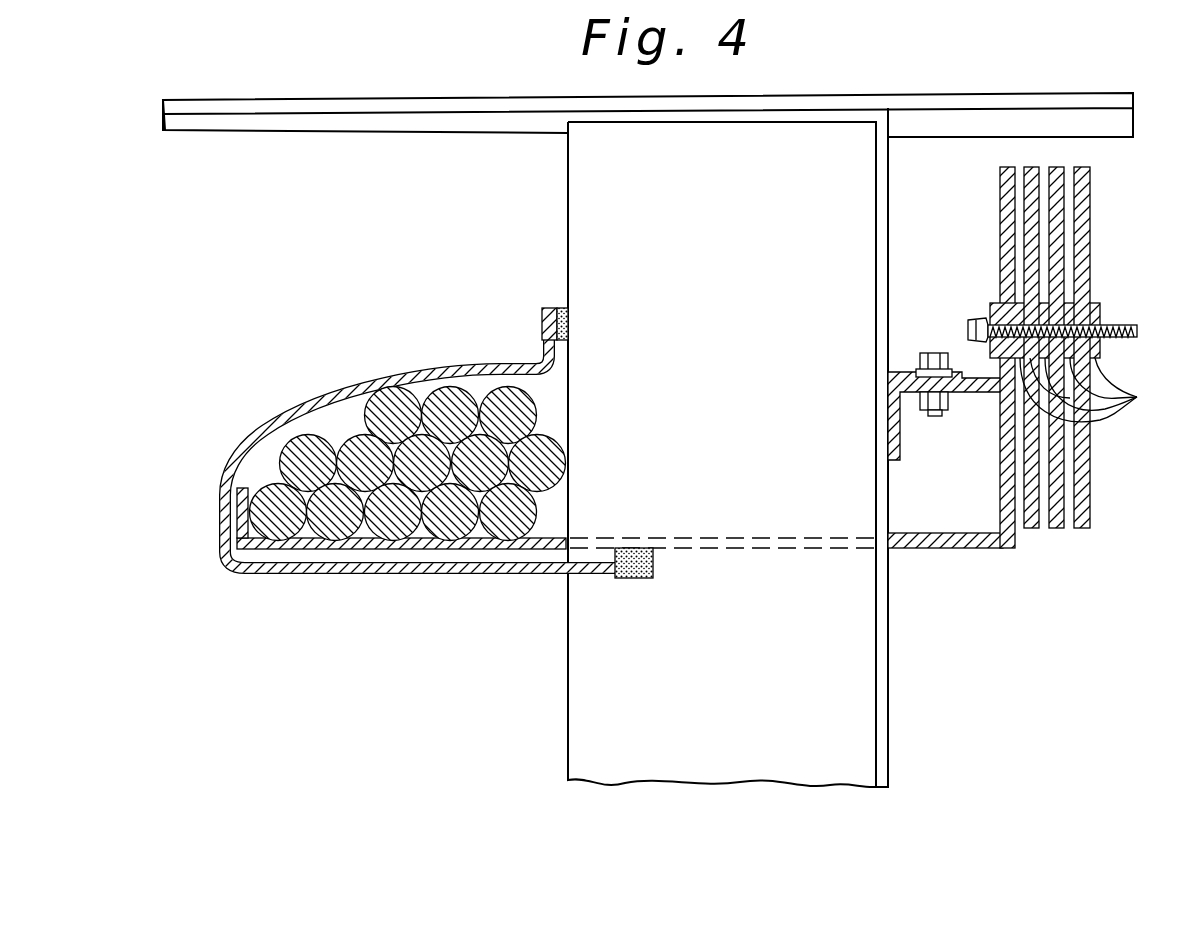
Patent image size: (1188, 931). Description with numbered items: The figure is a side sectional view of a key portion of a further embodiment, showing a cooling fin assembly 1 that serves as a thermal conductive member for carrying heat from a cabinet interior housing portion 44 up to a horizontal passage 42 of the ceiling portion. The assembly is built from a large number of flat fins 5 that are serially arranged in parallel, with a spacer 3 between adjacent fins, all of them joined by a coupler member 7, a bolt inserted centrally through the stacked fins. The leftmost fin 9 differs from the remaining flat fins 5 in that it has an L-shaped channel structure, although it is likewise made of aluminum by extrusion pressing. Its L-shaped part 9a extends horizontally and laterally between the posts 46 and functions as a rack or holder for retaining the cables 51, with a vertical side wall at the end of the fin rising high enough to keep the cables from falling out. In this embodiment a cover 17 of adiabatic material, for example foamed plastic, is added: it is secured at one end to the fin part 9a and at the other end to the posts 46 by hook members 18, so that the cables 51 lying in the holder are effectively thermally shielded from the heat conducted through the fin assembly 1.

The cooling fin assembly 1 is at (1093, 576).
The cables 3 is at (1089, 390).
The flat fins 5 is at (1032, 528).
The coupler member 7 is at (1130, 325).
The leftmost fin 9 is at (1000, 478).
The L-shaped part 9a is at (465, 575).
The cover 17 is at (292, 575).
The hook members 18 is at (543, 312).
The horizontal passage 42 is at (960, 160).
The cabinet interior housing portion 44 is at (998, 718).
The posts 46 is at (840, 760).
The cables 51 is at (346, 419).